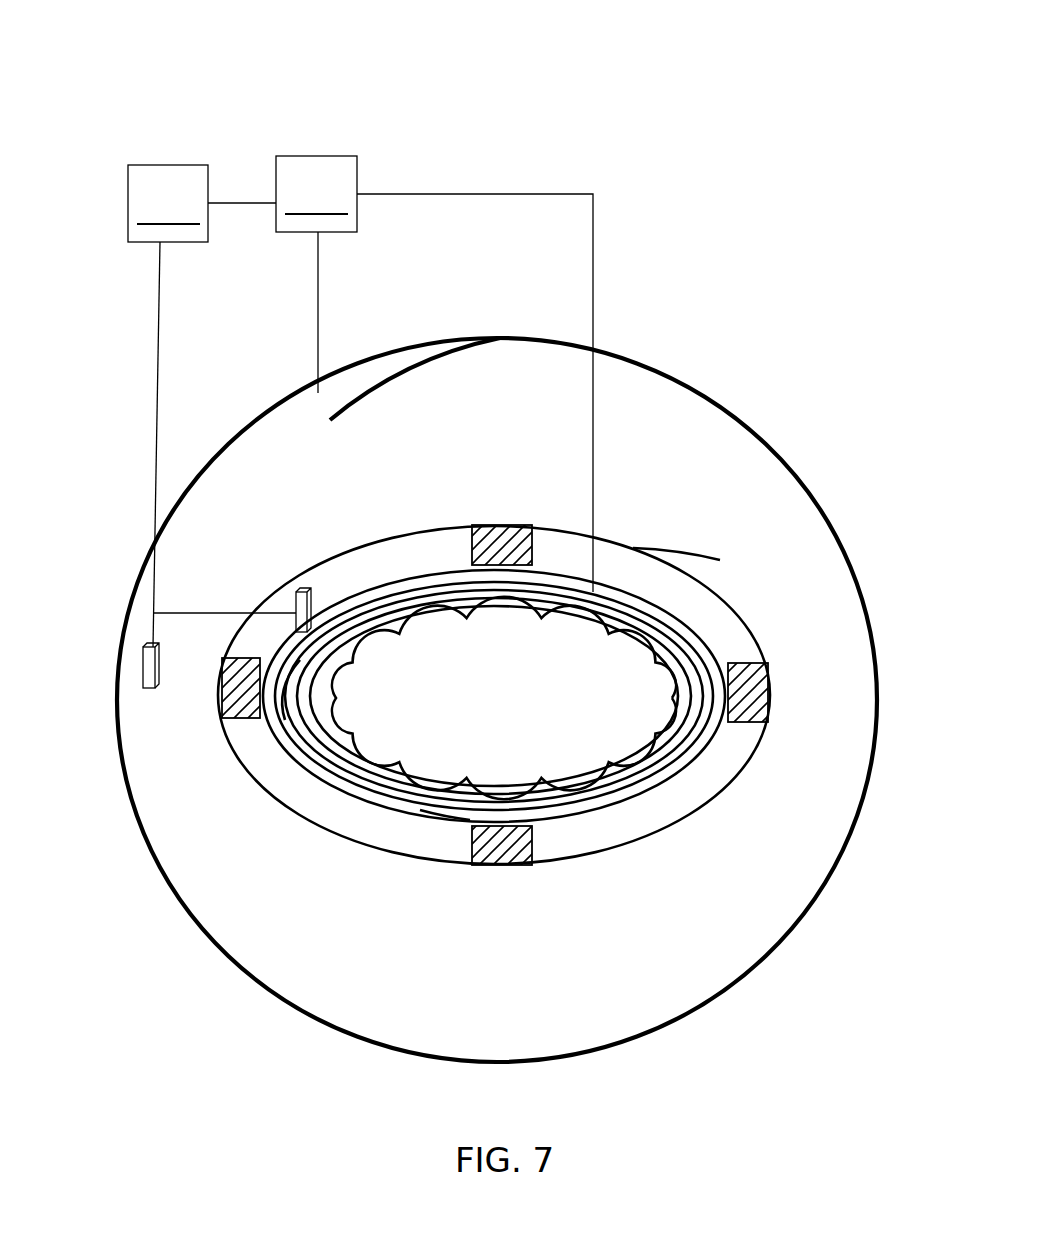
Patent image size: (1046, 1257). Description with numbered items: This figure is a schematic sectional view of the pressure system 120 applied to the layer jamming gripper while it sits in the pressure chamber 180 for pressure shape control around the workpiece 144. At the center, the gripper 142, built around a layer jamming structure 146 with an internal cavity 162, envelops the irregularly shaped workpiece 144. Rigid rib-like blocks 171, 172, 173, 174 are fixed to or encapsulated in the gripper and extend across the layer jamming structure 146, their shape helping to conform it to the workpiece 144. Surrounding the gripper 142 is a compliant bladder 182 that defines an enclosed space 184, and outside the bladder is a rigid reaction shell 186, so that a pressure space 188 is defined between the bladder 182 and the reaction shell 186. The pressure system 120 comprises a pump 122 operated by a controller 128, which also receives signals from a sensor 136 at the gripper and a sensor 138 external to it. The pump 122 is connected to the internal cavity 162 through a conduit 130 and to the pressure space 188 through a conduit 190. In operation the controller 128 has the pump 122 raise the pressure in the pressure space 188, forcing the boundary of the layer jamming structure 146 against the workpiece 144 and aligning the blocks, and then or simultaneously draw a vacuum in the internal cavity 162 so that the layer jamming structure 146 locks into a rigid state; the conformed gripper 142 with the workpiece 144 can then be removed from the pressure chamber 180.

The pressure system 120 is at (232, 140).
The pump 122 is at (316, 194).
The controller 128 is at (202, 406).
The conduit 130 is at (523, 193).
The sensor 136 is at (307, 590).
The sensor 138 is at (147, 663).
The gripper 142 is at (697, 768).
The workpiece 144 is at (518, 716).
The layer jamming structure 146 is at (433, 825).
The internal cavity 162 is at (293, 718).
The block 171 is at (232, 757).
The block 172 is at (470, 545).
The block 173 is at (742, 722).
The block 174 is at (535, 860).
The pressure chamber 180 is at (123, 598).
The bladder 182 is at (722, 590).
The enclosed space 184 is at (633, 568).
The reaction shell 186 is at (395, 350).
The pressure space 188 is at (675, 420).
The conduit 190 is at (318, 295).